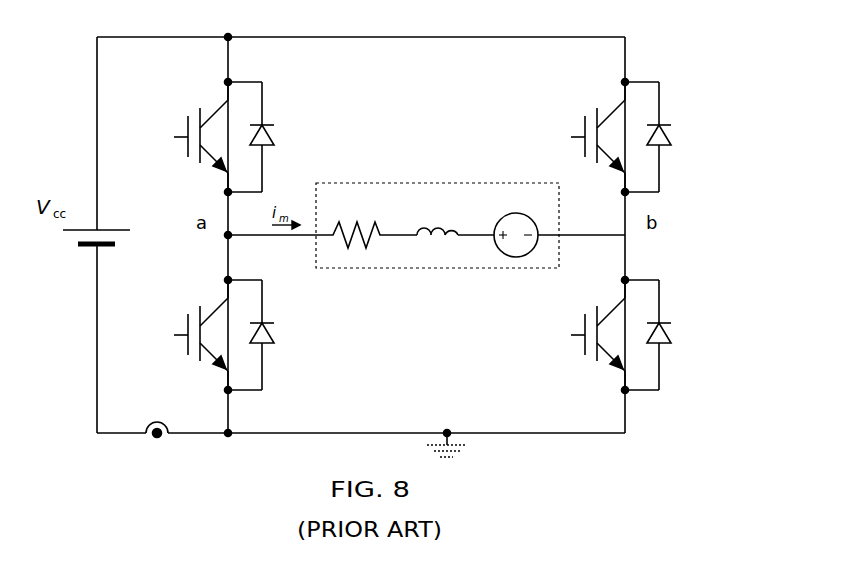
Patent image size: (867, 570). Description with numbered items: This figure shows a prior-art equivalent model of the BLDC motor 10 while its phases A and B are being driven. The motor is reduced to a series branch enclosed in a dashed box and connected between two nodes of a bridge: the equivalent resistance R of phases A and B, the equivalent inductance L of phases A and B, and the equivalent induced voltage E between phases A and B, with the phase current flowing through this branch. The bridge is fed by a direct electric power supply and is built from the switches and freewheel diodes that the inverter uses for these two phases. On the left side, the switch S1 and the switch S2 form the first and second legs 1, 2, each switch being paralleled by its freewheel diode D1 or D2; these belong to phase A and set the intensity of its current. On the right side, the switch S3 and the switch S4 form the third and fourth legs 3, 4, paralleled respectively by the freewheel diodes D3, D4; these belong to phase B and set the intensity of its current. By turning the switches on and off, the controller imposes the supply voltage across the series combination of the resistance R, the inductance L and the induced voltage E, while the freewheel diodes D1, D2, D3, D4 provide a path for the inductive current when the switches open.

The BLDC motor 10 is at (437, 259).
The first switch leg (S1 with D1) 1 is at (227, 137).
The second switch leg (S2 with D2) 2 is at (227, 335).
The third switch leg (S3 with D3) 3 is at (625, 137).
The fourth switch leg (S4 with D4) 4 is at (625, 335).
The switch S1 is at (193, 137).
The switch S2 is at (193, 335).
The switch S3 is at (590, 137).
The switch S4 is at (590, 335).
The freewheel diode D1 is at (264, 137).
The freewheel diode D2 is at (264, 335).
The freewheel diode D3 is at (661, 137).
The freewheel diode D4 is at (661, 335).
The equivalent resistance R is at (355, 220).
The equivalent inductance L is at (437, 214).
The equivalent induced voltage E is at (516, 224).